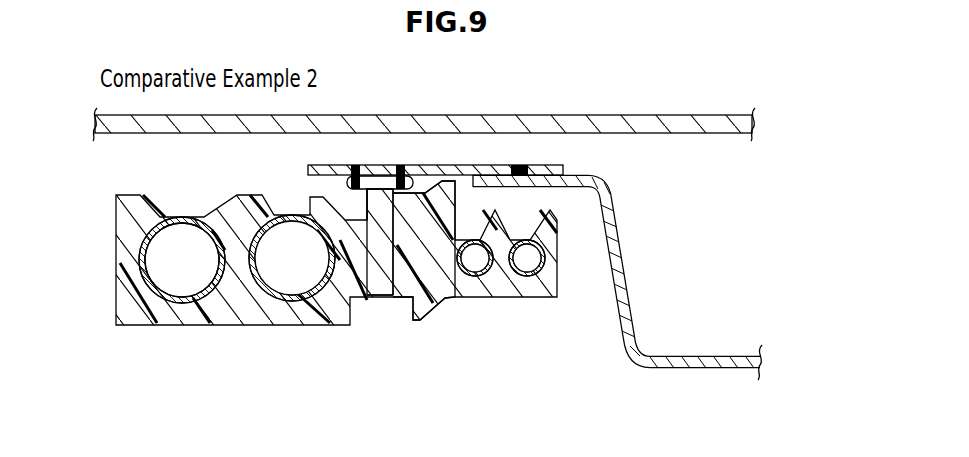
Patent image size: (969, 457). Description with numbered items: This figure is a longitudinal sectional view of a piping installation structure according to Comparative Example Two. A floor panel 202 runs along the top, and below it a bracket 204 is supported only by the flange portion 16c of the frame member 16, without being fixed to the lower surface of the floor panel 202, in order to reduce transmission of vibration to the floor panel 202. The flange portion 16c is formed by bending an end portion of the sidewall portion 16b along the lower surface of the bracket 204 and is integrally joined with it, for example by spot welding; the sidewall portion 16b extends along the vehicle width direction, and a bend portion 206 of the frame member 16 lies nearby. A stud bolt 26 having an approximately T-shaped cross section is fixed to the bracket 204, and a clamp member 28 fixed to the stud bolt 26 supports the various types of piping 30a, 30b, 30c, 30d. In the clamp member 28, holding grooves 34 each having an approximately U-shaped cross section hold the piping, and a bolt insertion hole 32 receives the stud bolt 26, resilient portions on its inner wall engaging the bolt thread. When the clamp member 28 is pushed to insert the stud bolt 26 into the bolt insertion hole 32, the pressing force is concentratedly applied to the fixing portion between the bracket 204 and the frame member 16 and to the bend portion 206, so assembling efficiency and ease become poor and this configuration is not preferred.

The floor panel 202 is at (626, 116).
The bracket 204 is at (466, 165).
The clamp member 28 is at (108, 236).
The piping 30a is at (145, 302).
The piping 30b is at (285, 301).
The piping 30c is at (472, 277).
The piping 30d is at (524, 277).
The bolt insertion hole 32 is at (380, 296).
The holding groove 34 is at (192, 286).
The stud bolt 26 is at (396, 298).
The frame member 16 is at (617, 298).
The sidewall portion 16b is at (633, 288).
The flange portion 16c is at (540, 188).
The bend portion 206 is at (630, 368).